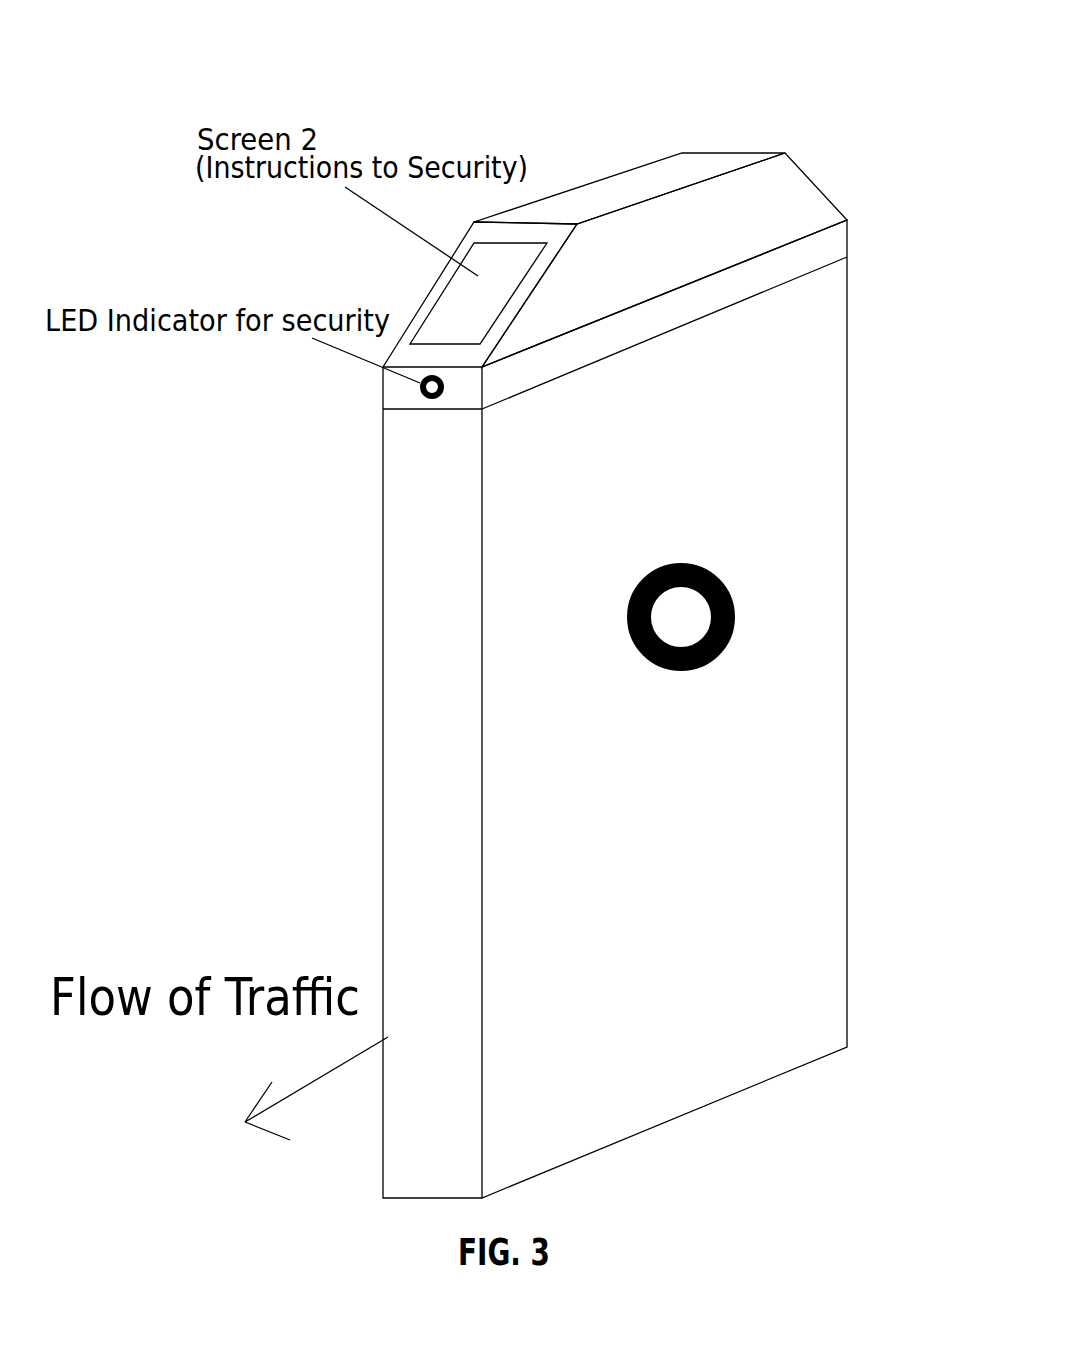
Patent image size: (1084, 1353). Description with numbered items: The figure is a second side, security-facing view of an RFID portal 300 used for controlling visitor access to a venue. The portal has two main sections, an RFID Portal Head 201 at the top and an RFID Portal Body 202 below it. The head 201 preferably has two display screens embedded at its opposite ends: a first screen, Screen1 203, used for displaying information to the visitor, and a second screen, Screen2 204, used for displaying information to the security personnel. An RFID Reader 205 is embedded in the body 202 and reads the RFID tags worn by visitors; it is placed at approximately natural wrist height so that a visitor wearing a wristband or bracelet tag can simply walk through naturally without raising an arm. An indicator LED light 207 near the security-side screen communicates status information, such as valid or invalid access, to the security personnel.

The RFID portal 300 is at (667, 602).
The RFID Portal Head 201 is at (629, 172).
The RFID Portal Body 202 is at (696, 709).
The Screen1 203 is at (681, 260).
The Screen2 204 is at (480, 294).
The RFID Reader 205 is at (708, 604).
The indicator LED light 207 is at (450, 362).